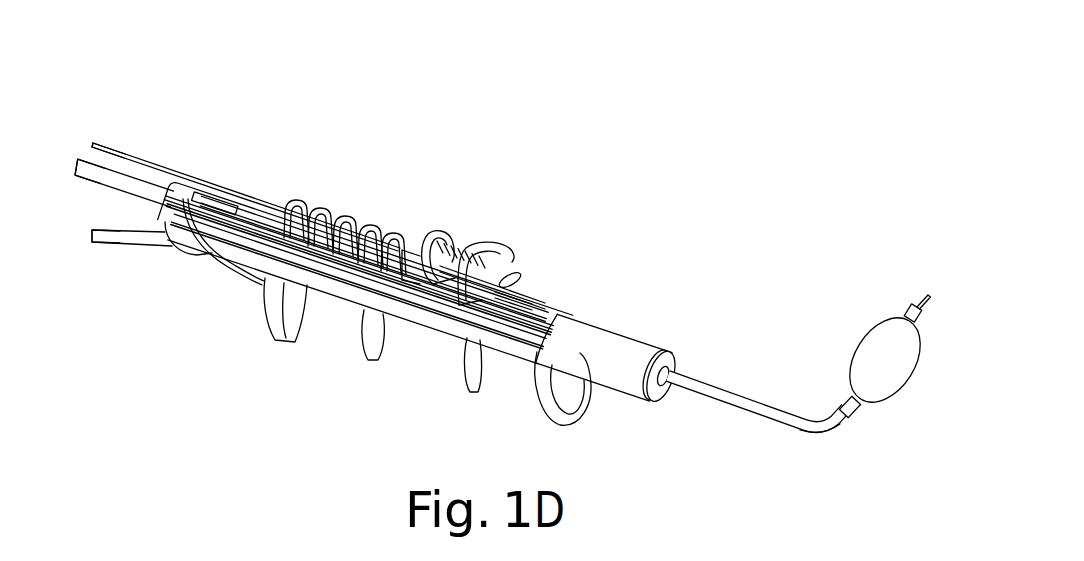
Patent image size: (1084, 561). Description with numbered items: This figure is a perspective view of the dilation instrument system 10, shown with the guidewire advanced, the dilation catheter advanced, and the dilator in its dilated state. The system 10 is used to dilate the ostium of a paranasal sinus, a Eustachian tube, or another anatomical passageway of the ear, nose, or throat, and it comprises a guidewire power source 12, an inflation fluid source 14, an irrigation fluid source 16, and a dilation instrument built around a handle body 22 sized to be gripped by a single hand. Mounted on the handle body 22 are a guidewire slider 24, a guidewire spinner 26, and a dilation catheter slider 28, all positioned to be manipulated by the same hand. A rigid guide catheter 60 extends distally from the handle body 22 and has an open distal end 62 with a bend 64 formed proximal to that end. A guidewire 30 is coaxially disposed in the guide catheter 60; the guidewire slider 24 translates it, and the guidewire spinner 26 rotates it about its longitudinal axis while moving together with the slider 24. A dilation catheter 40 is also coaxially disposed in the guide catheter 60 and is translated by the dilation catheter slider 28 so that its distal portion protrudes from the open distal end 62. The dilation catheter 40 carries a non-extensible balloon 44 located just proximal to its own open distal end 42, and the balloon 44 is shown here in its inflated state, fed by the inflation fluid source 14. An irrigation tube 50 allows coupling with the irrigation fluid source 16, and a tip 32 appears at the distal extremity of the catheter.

The dilation instrument system 10 is at (733, 101).
The guidewire power source 12 is at (93, 143).
The inflation fluid source 14 is at (76, 160).
The irrigation fluid source 16 is at (84, 236).
The handle body 22 is at (612, 338).
The guidewire slider 24 is at (342, 219).
The guidewire spinner 26 is at (420, 242).
The dilation catheter slider 28 is at (473, 253).
The guidewire 30 is at (145, 159).
The distal tip 32 is at (927, 289).
The dilation catheter 40 is at (102, 180).
The open distal end 42 is at (904, 299).
The balloon 44 is at (893, 386).
The irrigation tube 50 is at (127, 247).
The guide catheter 60 is at (722, 390).
The open distal end 62 is at (875, 420).
The bend 64 is at (821, 448).